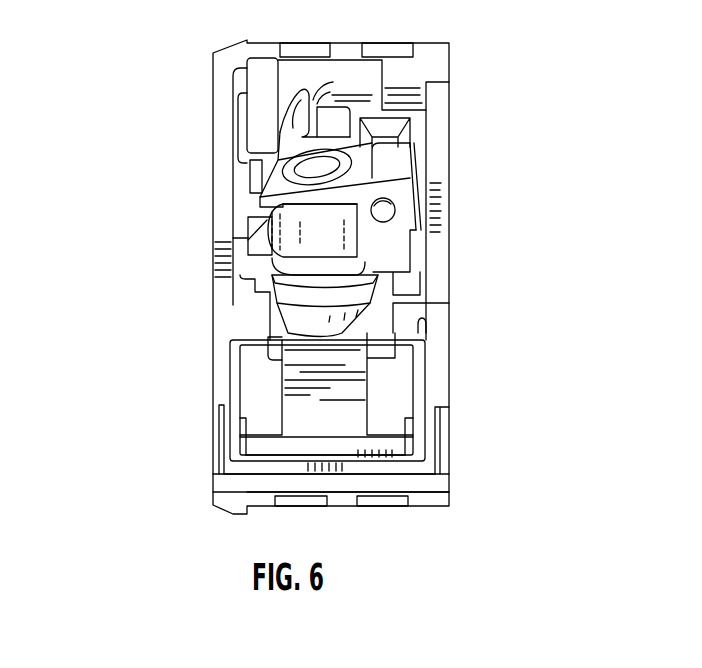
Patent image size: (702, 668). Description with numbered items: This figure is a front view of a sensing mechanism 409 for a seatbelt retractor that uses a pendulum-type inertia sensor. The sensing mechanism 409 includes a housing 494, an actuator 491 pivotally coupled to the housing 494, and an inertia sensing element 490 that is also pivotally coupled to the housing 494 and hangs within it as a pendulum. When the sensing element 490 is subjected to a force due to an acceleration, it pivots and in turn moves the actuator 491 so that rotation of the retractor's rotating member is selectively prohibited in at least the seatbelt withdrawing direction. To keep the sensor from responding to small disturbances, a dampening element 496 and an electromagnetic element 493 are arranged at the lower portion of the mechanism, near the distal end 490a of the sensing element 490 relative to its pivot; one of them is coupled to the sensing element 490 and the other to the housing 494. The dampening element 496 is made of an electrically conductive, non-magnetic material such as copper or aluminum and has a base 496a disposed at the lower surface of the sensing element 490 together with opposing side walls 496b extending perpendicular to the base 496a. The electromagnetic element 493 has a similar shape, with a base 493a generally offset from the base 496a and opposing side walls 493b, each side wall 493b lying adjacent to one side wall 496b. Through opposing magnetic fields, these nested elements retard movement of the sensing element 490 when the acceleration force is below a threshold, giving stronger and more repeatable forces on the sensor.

The sensing mechanism 409 is at (105, 71).
The inertia sensing element 490 is at (254, 397).
The distal end 490a is at (255, 443).
The actuator 491 is at (304, 79).
The electromagnetic element 493 is at (437, 444).
The base 493a is at (367, 470).
The side walls 493b is at (437, 437).
The housing 494 is at (440, 172).
The dampening element 496 is at (410, 437).
The base 496a is at (273, 460).
The side walls 496b is at (414, 423).